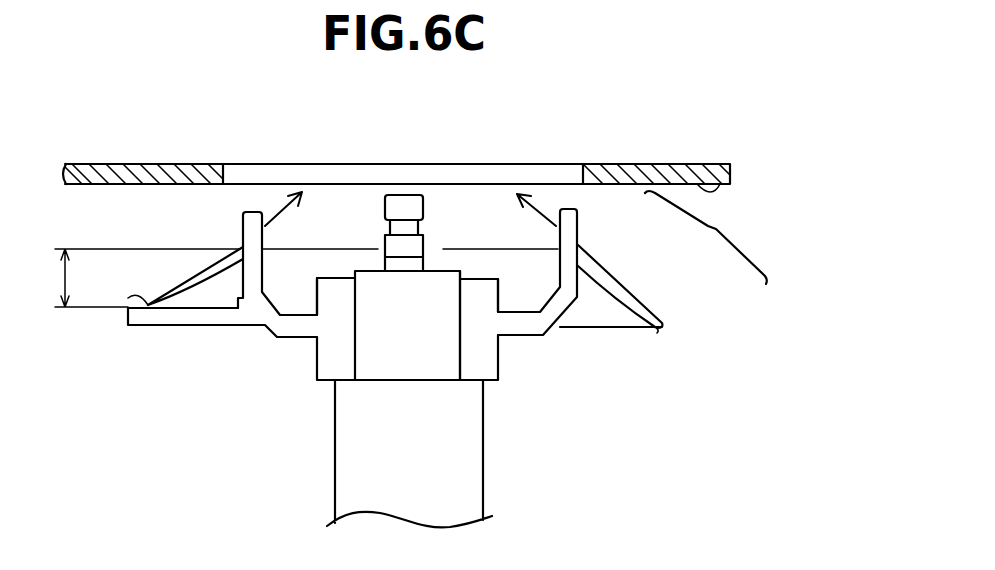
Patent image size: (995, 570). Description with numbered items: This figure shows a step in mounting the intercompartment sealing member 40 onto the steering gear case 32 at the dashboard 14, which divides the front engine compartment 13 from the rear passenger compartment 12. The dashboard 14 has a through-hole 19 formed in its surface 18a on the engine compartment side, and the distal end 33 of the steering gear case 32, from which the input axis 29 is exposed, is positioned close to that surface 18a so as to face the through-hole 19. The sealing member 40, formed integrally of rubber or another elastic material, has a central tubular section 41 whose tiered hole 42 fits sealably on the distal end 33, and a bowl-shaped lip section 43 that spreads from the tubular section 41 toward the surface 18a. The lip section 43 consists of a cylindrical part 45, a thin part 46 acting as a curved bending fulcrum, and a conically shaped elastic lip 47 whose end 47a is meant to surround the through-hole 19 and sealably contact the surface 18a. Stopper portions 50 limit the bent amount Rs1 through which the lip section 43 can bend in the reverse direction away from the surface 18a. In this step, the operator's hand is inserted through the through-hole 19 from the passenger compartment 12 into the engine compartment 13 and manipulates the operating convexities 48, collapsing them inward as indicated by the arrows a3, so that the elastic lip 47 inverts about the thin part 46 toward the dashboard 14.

The passenger compartment 12 is at (128, 130).
The engine compartment 13 is at (128, 228).
The dashboard 14 is at (637, 165).
The bottom surface of the expanding part 18a is at (720, 184).
The through-hole 19 is at (583, 165).
The input axis 29 is at (404, 195).
The steering gear case 32 is at (510, 492).
The distal end of the steering gear case 33 is at (373, 340).
The intercompartment sealing member 40 is at (535, 350).
The tubular section 41 is at (497, 366).
The hole of the tubular section 42 is at (446, 286).
The lip section 43 is at (706, 237).
The cylindrical part 45 is at (586, 282).
The thin part 46 is at (580, 258).
The elastic lip 47 is at (200, 272).
The end of the lip section 47a is at (128, 298).
The operating convexity 48 is at (252, 211).
The stopper portion 50 is at (188, 322).
The bent amount Rs1 is at (282, 278).
The arrows a3 is at (410, 220).